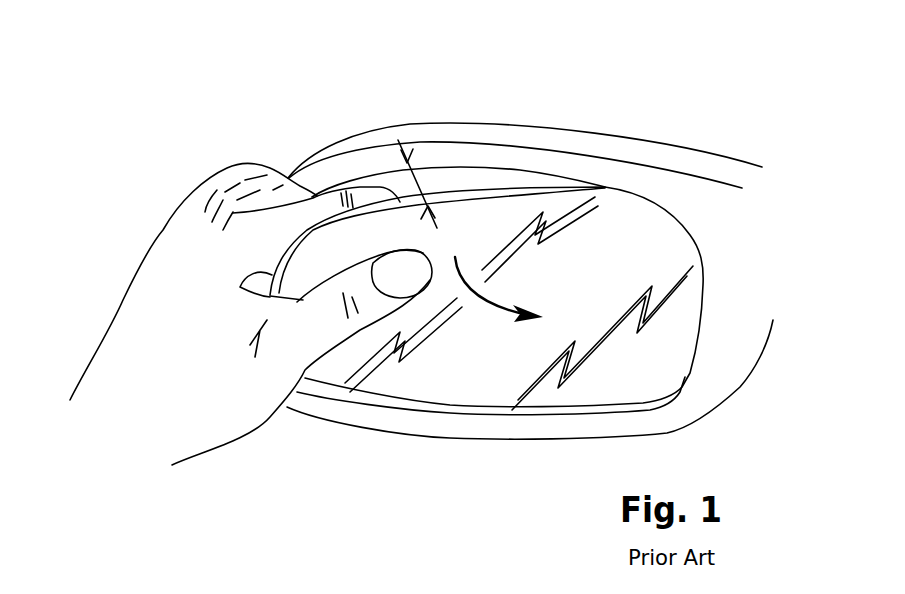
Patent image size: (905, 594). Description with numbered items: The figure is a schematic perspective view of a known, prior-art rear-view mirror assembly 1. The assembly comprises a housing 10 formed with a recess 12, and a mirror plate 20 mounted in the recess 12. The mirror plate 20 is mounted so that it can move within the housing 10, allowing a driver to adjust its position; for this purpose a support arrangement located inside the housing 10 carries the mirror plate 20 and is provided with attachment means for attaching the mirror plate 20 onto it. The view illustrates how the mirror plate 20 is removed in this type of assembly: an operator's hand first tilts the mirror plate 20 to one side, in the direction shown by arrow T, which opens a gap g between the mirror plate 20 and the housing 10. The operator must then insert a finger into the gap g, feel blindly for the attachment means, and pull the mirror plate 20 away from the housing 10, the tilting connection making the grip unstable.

The rear-view mirror assembly 1 is at (527, 270).
The housing 10 is at (722, 355).
The recess 12 is at (453, 182).
The mirror plate 20 is at (447, 370).
The gap g is at (412, 182).
The arrow T is at (508, 291).